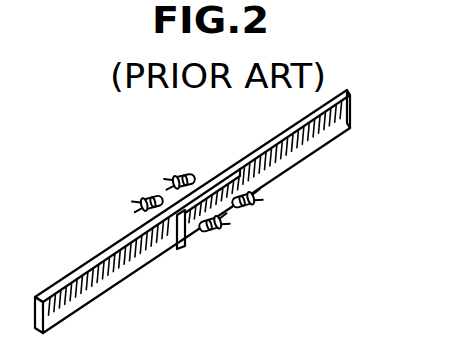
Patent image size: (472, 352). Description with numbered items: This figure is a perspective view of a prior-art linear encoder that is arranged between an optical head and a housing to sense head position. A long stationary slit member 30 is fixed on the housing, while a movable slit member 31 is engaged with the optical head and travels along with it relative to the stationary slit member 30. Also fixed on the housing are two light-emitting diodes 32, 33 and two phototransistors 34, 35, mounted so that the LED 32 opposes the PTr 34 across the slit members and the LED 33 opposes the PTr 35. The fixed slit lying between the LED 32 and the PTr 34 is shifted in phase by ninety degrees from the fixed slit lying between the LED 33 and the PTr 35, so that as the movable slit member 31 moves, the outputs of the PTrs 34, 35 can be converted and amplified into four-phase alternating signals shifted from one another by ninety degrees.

The stationary slit member 30 is at (341, 115).
The movable slit member 31 is at (181, 249).
The light-emitting diode 32 is at (151, 196).
The light-emitting diode 33 is at (180, 177).
The phototransistor 34 is at (223, 232).
The phototransistor 35 is at (252, 209).